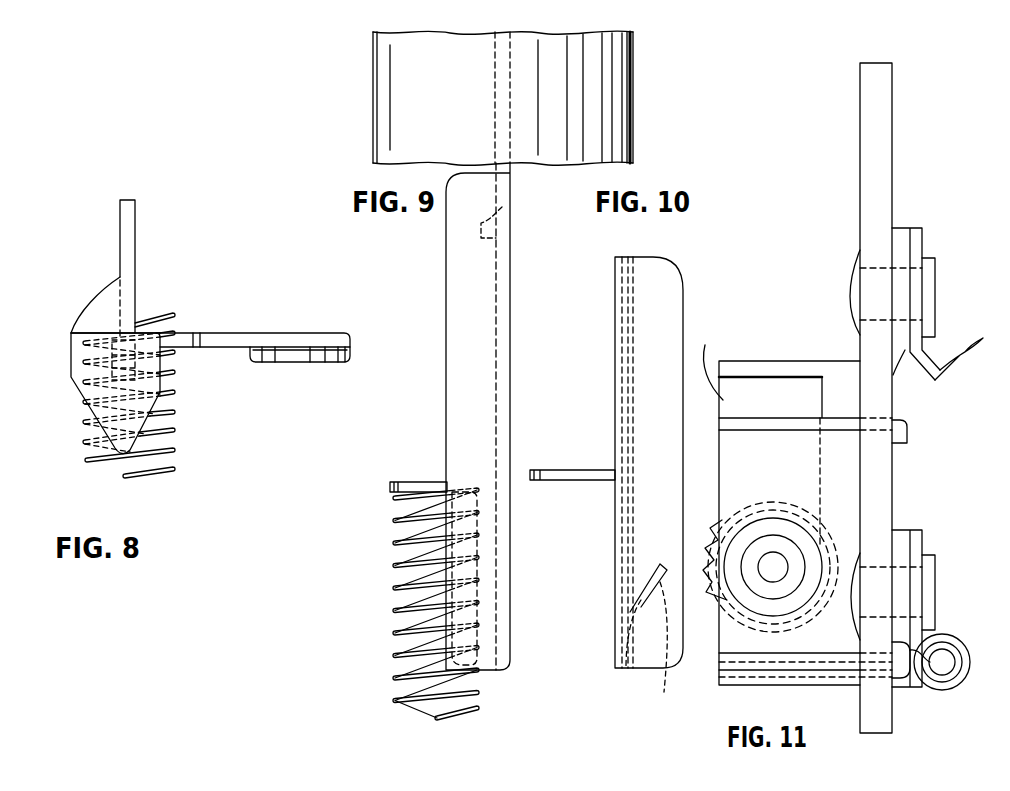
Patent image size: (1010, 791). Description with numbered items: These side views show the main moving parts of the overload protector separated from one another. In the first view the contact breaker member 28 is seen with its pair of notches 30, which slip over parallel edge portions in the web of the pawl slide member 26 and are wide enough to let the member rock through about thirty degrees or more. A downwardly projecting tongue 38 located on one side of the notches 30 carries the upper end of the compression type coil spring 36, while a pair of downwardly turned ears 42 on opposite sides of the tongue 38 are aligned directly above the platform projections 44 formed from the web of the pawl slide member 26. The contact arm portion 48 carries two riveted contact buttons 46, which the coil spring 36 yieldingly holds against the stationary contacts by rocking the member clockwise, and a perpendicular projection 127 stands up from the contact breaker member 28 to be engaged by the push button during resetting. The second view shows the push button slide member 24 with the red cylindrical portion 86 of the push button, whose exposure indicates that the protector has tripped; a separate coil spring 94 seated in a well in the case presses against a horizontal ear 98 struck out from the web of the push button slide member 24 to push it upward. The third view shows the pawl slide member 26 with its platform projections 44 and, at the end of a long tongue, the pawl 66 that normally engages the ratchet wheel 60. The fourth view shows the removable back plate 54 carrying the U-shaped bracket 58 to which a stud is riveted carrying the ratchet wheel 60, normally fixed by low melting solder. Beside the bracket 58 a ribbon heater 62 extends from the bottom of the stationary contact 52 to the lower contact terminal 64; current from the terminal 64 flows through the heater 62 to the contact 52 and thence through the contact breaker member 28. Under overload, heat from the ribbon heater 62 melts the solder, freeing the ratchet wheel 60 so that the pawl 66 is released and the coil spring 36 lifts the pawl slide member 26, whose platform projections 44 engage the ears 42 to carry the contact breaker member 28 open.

In FIG. 8, the perpendicular projection 127 is at (120, 218).
In FIG. 8, the downwardly turned ears 42 is at (76, 393).
In FIG. 8, the downwardly projecting tongue 38 is at (95, 353).
In FIG. 8, the contact breaker member 28 is at (230, 339).
In FIG. 8, the notches 30 is at (200, 348).
In FIG. 8, the contact arm portion 48 is at (330, 338).
In FIG. 8, the contact buttons 46 is at (298, 362).
In FIG. 8, the compression type coil spring 36 is at (175, 450).
In FIG. 9, the cylindrical portion 86 is at (620, 86).
In FIG. 10, the push button slide member 24 is at (559, 261).
In FIG. 10, the horizontal ear 98 is at (408, 487).
In FIG. 10, the coil spring 94 is at (397, 583).
In FIG. 10, the platform projections 44 is at (563, 470).
In FIG. 10, the pawl slide member 26 is at (655, 269).
In FIG. 10, the pawl 66 is at (653, 635).
In FIG. 11, the back plate 54 is at (890, 176).
In FIG. 11, the stationary contact 52 is at (782, 368).
In FIG. 11, the ribbon heater 62 is at (705, 345).
In FIG. 11, the U-shaped bracket 58 is at (837, 418).
In FIG. 11, the ratchet wheel 60 is at (825, 522).
In FIG. 11, the lower contact terminal 64 is at (925, 673).